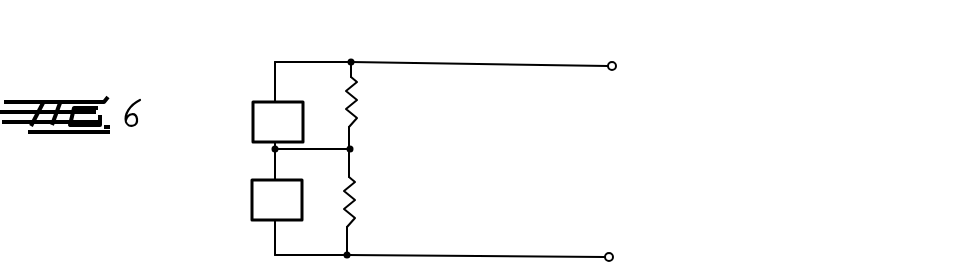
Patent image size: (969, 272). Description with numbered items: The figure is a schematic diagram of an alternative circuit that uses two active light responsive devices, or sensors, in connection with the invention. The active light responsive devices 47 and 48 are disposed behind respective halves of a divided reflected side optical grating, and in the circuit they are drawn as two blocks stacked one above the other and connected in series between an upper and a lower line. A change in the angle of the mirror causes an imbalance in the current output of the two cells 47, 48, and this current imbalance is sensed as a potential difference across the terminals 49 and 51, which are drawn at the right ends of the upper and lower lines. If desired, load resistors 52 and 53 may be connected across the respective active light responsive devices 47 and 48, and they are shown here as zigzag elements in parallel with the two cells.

The active light responsive device 47 is at (289, 108).
The active light responsive device 48 is at (290, 195).
The load resistor 52 is at (346, 122).
The load resistor 53 is at (346, 216).
The terminal 49 is at (616, 65).
The terminal 51 is at (613, 256).